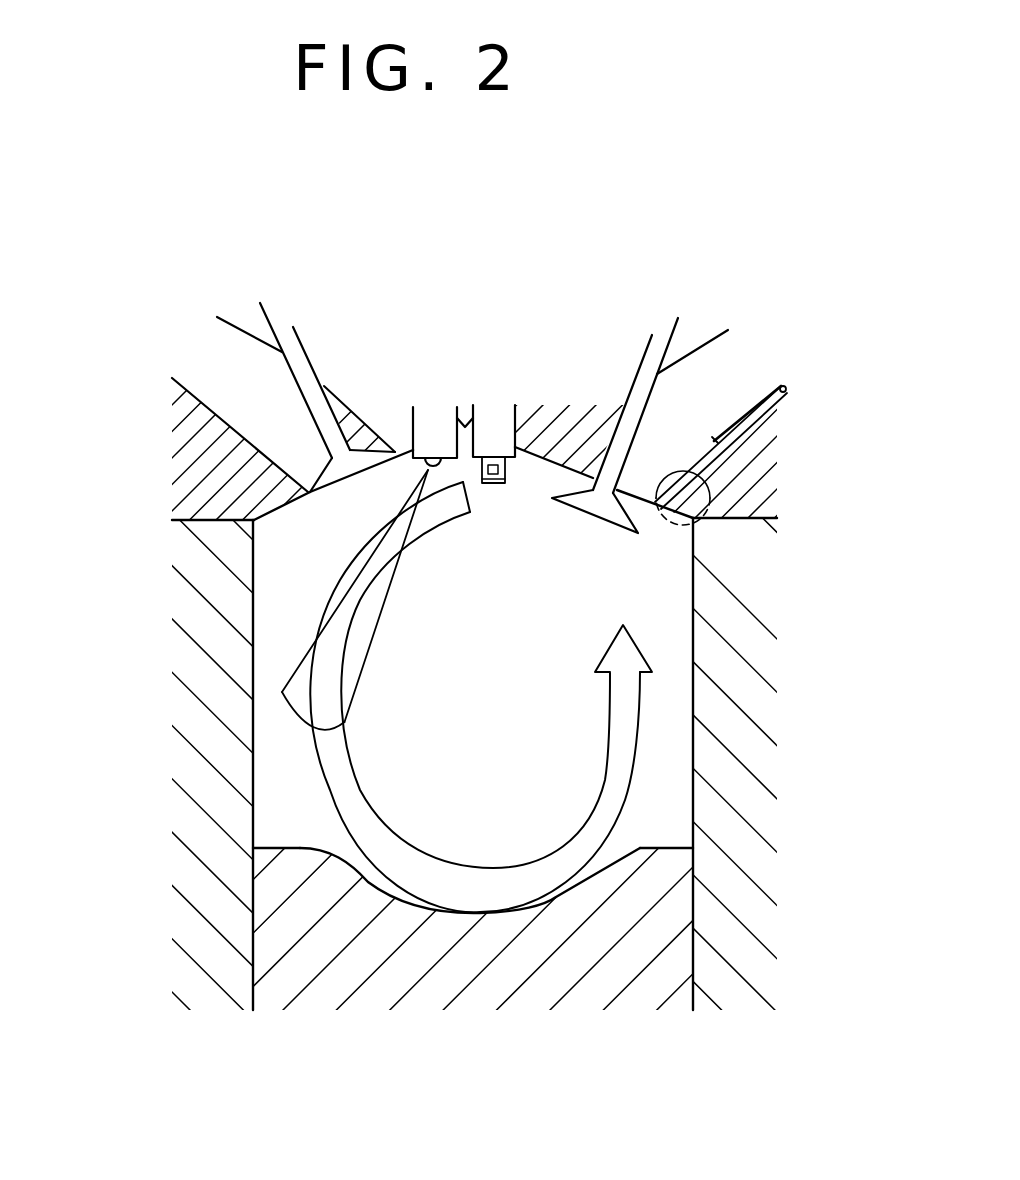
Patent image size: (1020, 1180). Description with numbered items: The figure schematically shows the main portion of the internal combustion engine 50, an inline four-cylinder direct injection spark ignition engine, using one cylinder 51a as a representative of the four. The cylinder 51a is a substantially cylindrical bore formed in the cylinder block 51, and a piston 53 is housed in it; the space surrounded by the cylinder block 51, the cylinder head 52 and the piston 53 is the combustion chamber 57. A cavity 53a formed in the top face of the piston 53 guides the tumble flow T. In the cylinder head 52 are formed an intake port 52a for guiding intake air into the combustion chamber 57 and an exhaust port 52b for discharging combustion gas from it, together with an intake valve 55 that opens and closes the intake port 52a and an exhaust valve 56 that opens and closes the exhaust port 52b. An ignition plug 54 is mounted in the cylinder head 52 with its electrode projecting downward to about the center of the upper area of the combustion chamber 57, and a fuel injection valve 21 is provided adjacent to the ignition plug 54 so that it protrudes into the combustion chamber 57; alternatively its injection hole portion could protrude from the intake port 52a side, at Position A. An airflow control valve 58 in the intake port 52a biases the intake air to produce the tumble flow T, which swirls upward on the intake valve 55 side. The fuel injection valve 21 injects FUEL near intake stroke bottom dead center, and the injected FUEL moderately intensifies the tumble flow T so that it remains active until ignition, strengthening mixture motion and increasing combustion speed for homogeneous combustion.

The internal combustion engine 50 is at (203, 268).
The cylinder block 51 is at (207, 748).
The cylinder 51a is at (693, 753).
The cylinder head 52 is at (217, 482).
The intake port 52a is at (700, 348).
The exhaust port 52b is at (195, 394).
The piston 53 is at (293, 930).
The cavity 53a is at (363, 880).
The ignition plug 54 is at (500, 427).
The intake valve 55 is at (645, 390).
The exhaust valve 56 is at (303, 368).
The combustion chamber 57 is at (640, 573).
The airflow control valve 58 is at (748, 410).
The fuel injection valve 21 is at (438, 423).
The Position A is at (712, 486).
The tumble flow T is at (623, 662).
The fuel FUEL is at (303, 690).